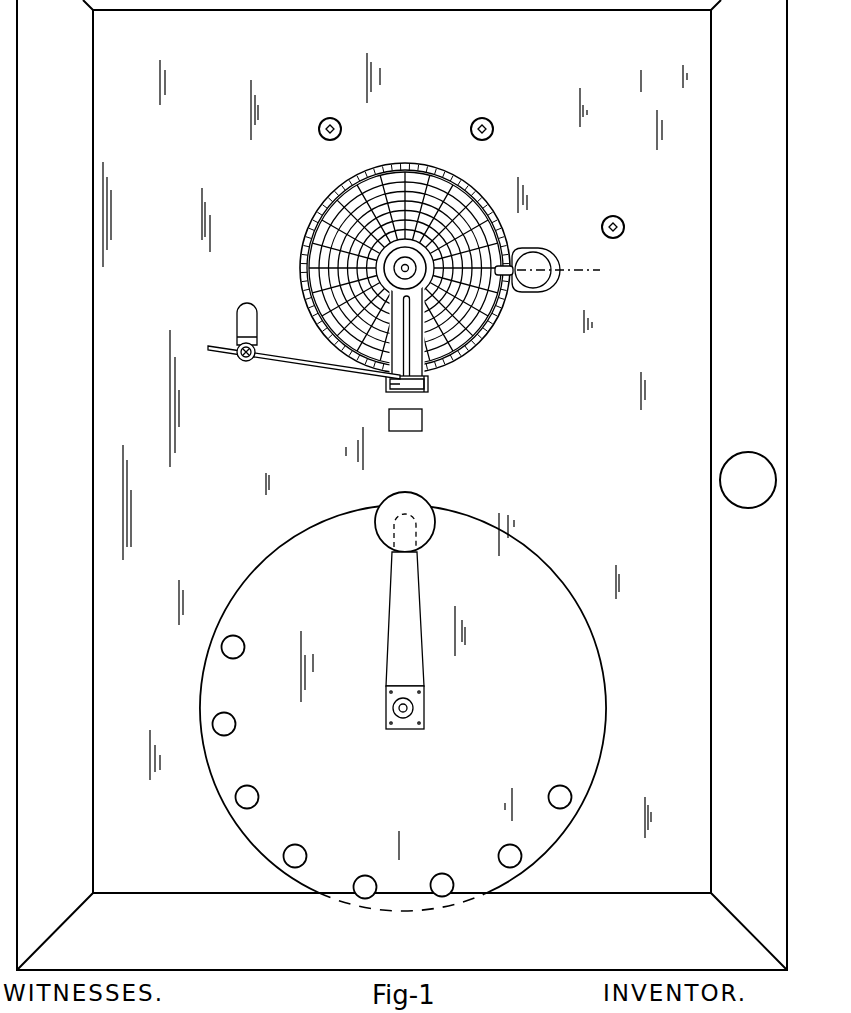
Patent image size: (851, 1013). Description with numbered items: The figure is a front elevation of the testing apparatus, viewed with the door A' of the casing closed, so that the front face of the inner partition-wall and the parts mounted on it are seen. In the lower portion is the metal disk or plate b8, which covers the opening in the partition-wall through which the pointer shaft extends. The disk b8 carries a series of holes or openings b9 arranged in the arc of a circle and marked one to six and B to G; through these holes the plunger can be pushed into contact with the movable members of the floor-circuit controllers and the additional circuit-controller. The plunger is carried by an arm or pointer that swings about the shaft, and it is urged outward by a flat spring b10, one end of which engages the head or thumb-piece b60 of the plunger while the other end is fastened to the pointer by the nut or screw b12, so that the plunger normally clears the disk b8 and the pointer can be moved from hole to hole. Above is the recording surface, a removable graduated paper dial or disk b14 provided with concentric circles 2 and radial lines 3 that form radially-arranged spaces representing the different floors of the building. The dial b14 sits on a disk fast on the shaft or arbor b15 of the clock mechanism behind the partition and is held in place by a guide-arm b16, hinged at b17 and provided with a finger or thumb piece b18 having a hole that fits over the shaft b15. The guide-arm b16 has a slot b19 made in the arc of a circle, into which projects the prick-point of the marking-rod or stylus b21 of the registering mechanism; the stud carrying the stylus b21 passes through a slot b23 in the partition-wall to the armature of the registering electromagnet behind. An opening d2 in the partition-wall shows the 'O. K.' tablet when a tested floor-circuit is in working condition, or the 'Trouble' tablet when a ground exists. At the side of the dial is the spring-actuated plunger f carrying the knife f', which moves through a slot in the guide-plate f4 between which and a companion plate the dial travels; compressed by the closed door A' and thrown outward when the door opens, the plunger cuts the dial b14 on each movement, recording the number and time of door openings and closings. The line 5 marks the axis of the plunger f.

The door A' is at (402, 485).
The disk or plate b8 is at (585, 694).
The holes or openings b9 is at (222, 649).
The flat spring b10 is at (412, 611).
The nut or screw b12 is at (414, 708).
The head or thumb-piece b60 is at (412, 487).
The graduated dial or disk b14 is at (505, 313).
The shaft or arbor b15 is at (306, 263).
The guide-arm b16 is at (430, 378).
The hinge b17 is at (395, 388).
The finger or thumb piece b18 is at (412, 258).
The slot b19 is at (405, 313).
The marking-rod or stylus b21 is at (308, 366).
The slot b23 is at (237, 318).
The opening d2 is at (422, 428).
The spring-actuated plunger f is at (549, 282).
The knife f' is at (513, 290).
The guide-plate f4 is at (528, 248).
The concentric circles 2 is at (478, 335).
The radial lines 3 is at (428, 352).
The axis line 5 is at (509, 246).